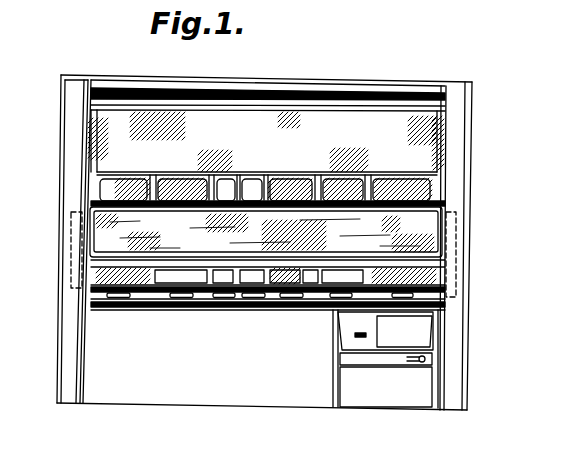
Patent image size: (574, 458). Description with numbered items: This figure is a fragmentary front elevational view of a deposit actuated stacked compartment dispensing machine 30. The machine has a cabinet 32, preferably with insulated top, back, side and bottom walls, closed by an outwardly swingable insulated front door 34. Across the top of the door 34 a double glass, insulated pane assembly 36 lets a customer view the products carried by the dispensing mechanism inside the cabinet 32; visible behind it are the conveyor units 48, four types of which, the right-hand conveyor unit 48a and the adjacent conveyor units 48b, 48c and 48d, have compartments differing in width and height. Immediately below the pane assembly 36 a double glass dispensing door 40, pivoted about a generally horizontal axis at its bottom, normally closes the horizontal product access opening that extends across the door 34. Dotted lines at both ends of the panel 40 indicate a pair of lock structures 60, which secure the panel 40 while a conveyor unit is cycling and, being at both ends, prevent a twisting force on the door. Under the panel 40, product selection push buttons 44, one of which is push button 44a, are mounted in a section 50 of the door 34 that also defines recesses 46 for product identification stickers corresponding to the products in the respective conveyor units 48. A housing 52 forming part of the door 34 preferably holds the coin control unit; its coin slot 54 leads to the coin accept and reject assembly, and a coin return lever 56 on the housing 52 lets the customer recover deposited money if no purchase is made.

The dispensing machine 30 is at (478, 92).
The cabinet 32 is at (88, 72).
The front door 34 is at (190, 394).
The pane assembly 36 is at (440, 147).
The dispensing door 40 is at (100, 254).
The product selection push buttons 44 is at (135, 300).
The push button 44a is at (343, 297).
The recesses 46 is at (134, 270).
The conveyor units 48 is at (361, 170).
The conveyor unit 48a is at (404, 178).
The conveyor unit 48b is at (334, 175).
The conveyor unit 48c is at (250, 174).
The conveyor unit 48d is at (172, 173).
The section 50 is at (180, 308).
The housing 52 is at (393, 398).
The coin slot 54 is at (353, 333).
The coin return lever 56 is at (400, 361).
The lock structures 60 is at (62, 242).